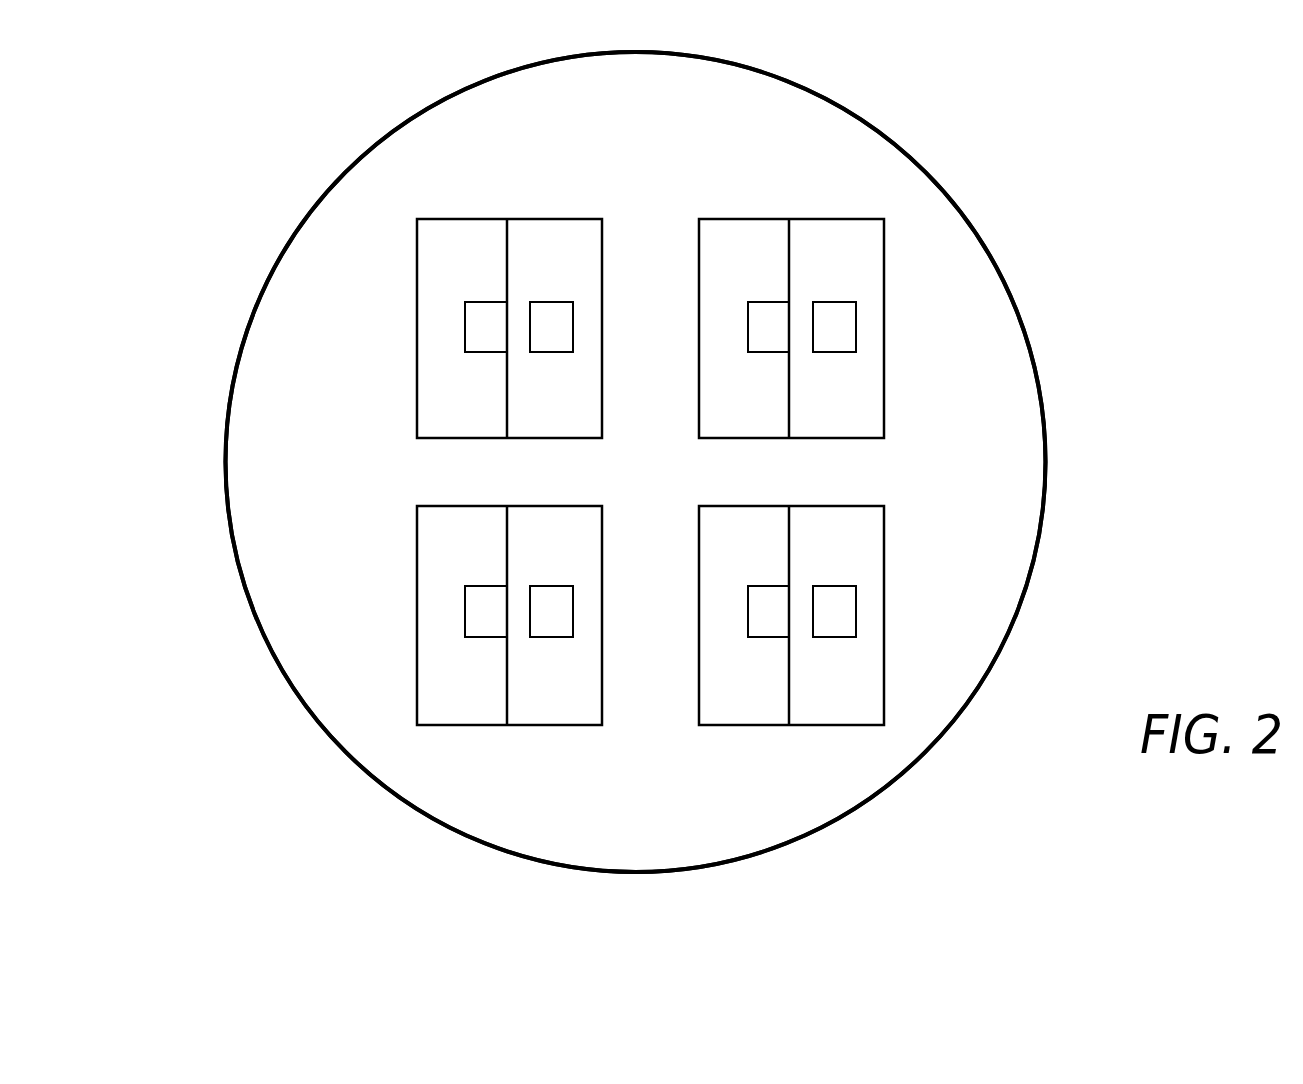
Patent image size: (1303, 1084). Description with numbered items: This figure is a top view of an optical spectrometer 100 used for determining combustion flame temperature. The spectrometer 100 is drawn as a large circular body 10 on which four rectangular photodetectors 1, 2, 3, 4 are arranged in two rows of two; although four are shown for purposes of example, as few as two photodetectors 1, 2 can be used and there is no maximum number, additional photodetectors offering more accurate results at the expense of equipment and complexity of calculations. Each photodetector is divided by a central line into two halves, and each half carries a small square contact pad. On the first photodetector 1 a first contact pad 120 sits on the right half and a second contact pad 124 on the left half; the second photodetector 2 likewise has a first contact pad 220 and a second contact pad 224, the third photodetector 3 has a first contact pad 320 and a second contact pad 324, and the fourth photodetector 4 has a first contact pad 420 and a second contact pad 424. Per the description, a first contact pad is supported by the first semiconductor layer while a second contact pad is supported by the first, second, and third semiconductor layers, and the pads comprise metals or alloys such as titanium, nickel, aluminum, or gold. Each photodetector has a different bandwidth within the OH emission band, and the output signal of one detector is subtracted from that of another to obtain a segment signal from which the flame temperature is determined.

The optical spectrometer 100 is at (318, 138).
The wafer substrate 10 is at (872, 793).
The photodetector 1 is at (469, 611).
The photodetector 2 is at (752, 589).
The photodetector 3 is at (509, 291).
The photodetector 4 is at (791, 291).
The first contact pad 120 is at (557, 586).
The second contact pad 124 is at (483, 586).
The first contact pad 220 is at (840, 586).
The second contact pad 224 is at (765, 586).
The first contact pad 320 is at (557, 302).
The second contact pad 324 is at (483, 302).
The first contact pad 420 is at (840, 302).
The second contact pad 424 is at (765, 302).